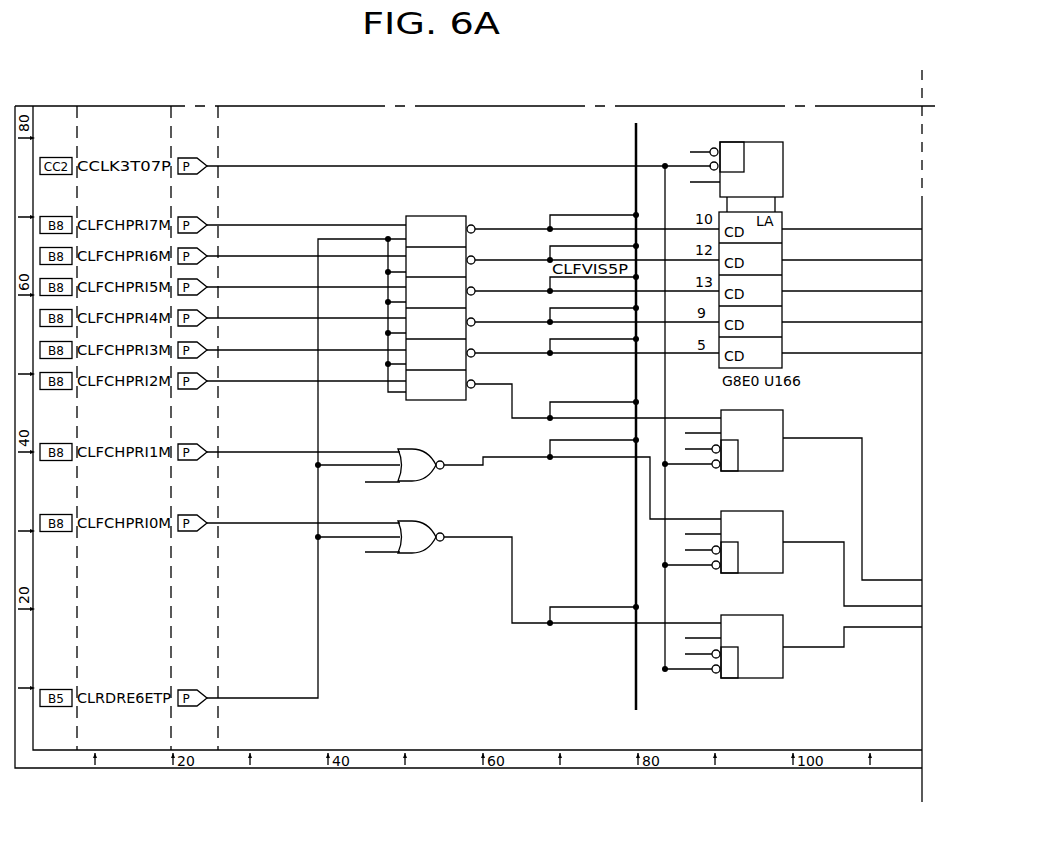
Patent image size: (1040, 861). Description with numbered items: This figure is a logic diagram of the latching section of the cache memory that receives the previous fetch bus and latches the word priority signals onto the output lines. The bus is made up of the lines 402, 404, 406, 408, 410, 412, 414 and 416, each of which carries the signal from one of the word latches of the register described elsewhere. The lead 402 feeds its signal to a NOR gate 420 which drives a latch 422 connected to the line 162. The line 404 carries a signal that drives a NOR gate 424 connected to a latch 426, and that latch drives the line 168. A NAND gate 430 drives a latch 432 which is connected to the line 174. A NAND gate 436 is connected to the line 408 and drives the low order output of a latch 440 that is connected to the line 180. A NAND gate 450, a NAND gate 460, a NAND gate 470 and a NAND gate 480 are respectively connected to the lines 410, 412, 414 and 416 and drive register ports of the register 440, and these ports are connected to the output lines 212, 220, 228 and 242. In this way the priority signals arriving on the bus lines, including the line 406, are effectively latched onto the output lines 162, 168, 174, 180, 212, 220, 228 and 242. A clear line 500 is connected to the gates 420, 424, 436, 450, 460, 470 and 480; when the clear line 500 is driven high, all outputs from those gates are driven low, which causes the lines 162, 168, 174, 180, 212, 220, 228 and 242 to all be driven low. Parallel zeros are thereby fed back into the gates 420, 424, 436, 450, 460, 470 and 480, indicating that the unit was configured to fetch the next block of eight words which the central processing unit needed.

The line 416 is at (258, 225).
The line 414 is at (248, 256).
The line 412 is at (250, 287).
The line 410 is at (250, 318).
The line 408 is at (246, 350).
The line 406 is at (273, 383).
The line 404 is at (270, 455).
The lead 402 is at (278, 526).
The clear line 500 is at (268, 696).
The NAND gate 430 is at (418, 390).
The NAND gate 480 is at (467, 221).
The NAND gate 470 is at (462, 254).
The NAND gate 460 is at (464, 299).
The NAND gate 450 is at (464, 331).
The NAND gate 436 is at (466, 374).
The NOR gate 424 is at (448, 469).
The NOR gate 420 is at (400, 554).
The latch 440 is at (785, 153).
The output line 242 is at (853, 228).
The output line 228 is at (849, 260).
The output line 220 is at (849, 291).
The output line 212 is at (855, 322).
The line 180 is at (877, 356).
The latch 432 is at (783, 415).
The line 174 is at (866, 463).
The latch 426 is at (785, 521).
The line 168 is at (895, 578).
The line 162 is at (878, 628).
The latch 422 is at (783, 662).